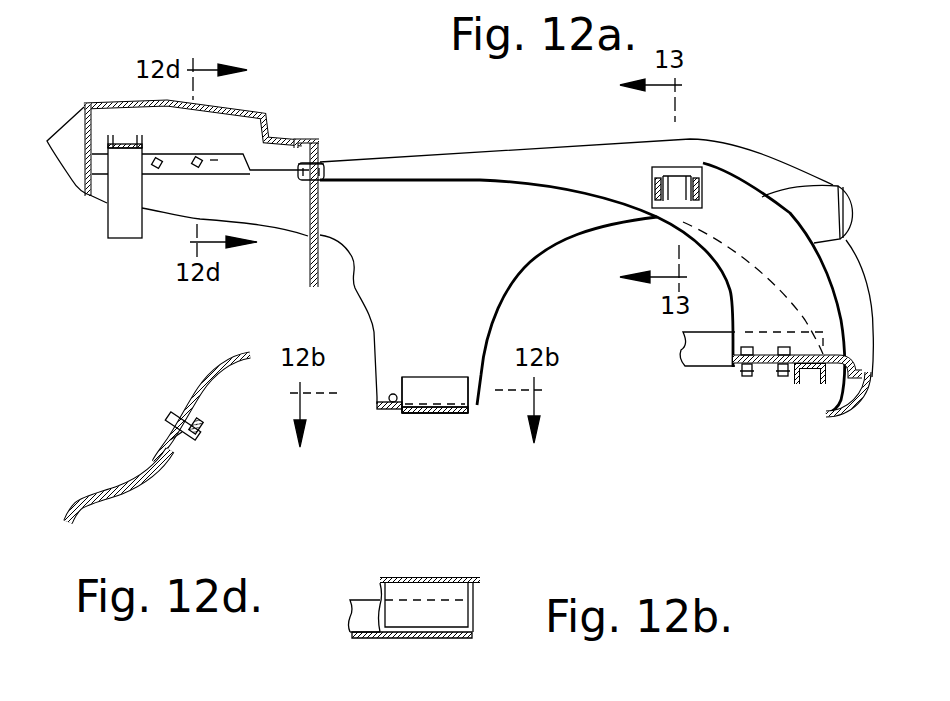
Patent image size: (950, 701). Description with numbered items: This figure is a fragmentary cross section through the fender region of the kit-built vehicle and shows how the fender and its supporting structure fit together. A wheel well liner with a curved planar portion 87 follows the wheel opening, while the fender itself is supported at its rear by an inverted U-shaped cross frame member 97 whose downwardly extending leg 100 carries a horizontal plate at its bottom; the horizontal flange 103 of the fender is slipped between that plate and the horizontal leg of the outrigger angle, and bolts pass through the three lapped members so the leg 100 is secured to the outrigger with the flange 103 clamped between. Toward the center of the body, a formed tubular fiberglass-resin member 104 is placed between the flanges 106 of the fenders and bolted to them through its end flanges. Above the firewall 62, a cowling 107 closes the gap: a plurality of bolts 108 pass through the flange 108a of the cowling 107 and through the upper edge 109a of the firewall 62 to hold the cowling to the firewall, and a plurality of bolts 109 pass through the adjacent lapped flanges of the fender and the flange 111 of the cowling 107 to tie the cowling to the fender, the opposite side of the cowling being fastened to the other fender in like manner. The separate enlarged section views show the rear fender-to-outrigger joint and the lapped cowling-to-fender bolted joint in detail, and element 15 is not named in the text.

In FIG. 12A, the fender panel 15 is at (462, 160).
In FIG. 12A, the firewall 62 is at (309, 274).
In FIG. 12A, the curved planar portion 87 is at (808, 388).
In FIG. 12A, the inverted U-shaped cross frame member 97 is at (105, 240).
In FIG. 12A, the leg 100 is at (118, 222).
In FIG. 12A, the horizontal flange 103 is at (382, 410).
In FIG. 12A, the formed tubular fiberglass-resin member 104 is at (676, 178).
In FIG. 12A, the flange 106 is at (712, 187).
In FIG. 12A, the cowling 107 is at (240, 110).
In FIG. 12D, the cowling 107 is at (215, 363).
In FIG. 12A, the bolt 108 is at (323, 153).
In FIG. 12A, the flange 108a is at (324, 186).
In FIG. 12A, the bolt 109 is at (197, 158).
In FIG. 12D, the bolt 109 is at (165, 412).
In FIG. 12A, the upper edge 109a is at (300, 141).
In FIG. 12D, the flange 111 is at (165, 435).